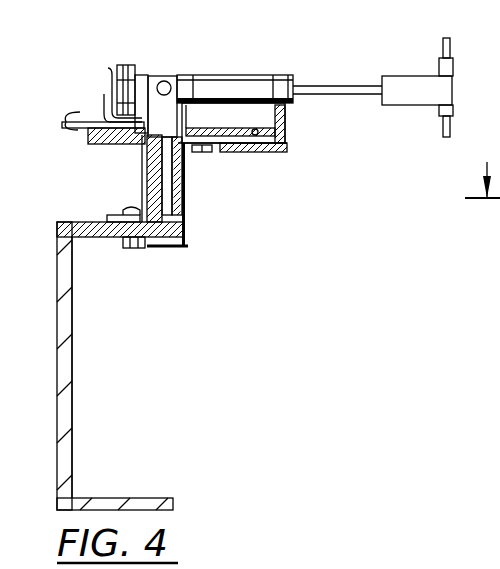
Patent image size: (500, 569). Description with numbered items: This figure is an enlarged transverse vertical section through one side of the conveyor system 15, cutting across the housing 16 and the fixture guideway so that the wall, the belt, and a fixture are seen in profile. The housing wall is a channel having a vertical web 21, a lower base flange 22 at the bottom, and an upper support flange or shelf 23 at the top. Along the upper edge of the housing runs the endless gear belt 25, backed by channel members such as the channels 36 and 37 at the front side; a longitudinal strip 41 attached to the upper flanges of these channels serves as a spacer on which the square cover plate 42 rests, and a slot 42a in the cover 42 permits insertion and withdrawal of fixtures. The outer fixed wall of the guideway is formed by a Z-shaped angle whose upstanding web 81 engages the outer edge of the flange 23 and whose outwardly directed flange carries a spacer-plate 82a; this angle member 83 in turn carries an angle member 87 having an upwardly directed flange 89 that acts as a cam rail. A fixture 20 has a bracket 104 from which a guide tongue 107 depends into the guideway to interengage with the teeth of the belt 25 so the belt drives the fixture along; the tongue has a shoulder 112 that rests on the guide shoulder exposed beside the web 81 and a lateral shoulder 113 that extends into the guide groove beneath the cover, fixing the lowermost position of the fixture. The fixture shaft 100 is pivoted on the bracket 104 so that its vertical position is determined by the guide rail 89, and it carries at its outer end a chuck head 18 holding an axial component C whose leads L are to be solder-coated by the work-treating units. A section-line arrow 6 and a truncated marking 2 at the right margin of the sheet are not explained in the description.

The fixture 20 is at (204, 71).
The bracket 104 is at (173, 77).
The fixture shaft 100 is at (343, 96).
The chuck head 18 is at (398, 75).
The leads L is at (450, 45).
The axial component C is at (455, 70).
The partial numeral 2 is at (496, 126).
The upwardly directed flange 89 is at (283, 120).
The spacer-plate 82a is at (240, 125).
The shoulder 112 is at (184, 135).
The angle member 87 is at (284, 152).
The conveyor system 15 is at (134, 155).
The guide tongue 107 is at (165, 167).
The endless gear belt 25 is at (176, 192).
The upstanding web 81 is at (179, 222).
The angle member 83 is at (187, 247).
The lateral shoulder 113 is at (136, 143).
The cover plate 42 is at (75, 108).
The slot 42a is at (110, 113).
The longitudinal strip 41 is at (100, 112).
The channel 36 is at (145, 200).
The channel 37 is at (107, 213).
The upper support flange 23 is at (93, 238).
The housing 16 is at (72, 378).
The vertical web 21 is at (107, 447).
The lower base flange 22 is at (113, 500).
The section view arrow 6 is at (482, 205).